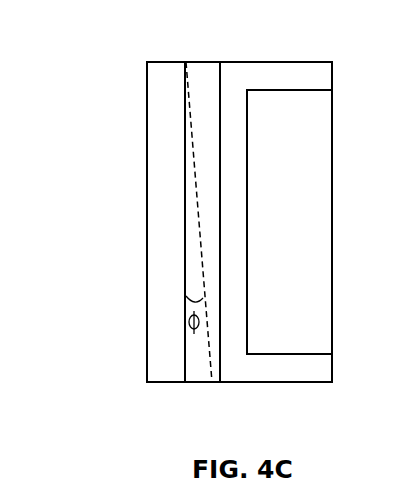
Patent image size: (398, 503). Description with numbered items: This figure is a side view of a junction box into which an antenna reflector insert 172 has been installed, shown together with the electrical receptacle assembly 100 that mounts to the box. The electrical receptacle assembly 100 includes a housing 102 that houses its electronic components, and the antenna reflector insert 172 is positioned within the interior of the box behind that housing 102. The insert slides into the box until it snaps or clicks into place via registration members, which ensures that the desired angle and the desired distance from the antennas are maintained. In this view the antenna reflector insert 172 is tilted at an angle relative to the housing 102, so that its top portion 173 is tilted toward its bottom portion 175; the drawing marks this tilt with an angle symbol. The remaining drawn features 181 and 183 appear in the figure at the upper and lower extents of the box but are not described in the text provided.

The electrical receptacle assembly 100 is at (310, 230).
The housing 102 is at (310, 353).
The antenna reflector insert 172 is at (185, 218).
The top portion 173 is at (133, 107).
The bottom portion 175 is at (133, 358).
The top surface of body 181 is at (282, 62).
The bottom surface of body 183 is at (284, 383).